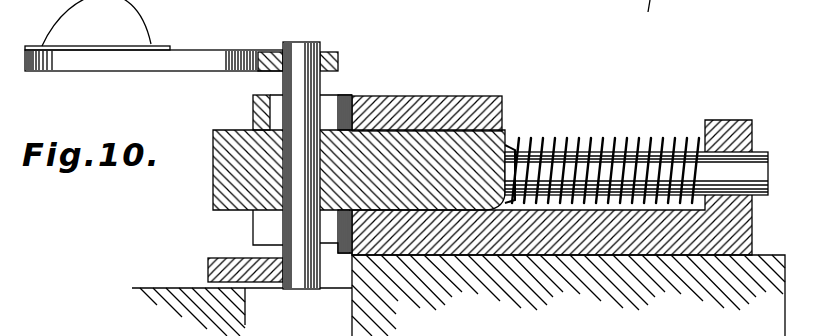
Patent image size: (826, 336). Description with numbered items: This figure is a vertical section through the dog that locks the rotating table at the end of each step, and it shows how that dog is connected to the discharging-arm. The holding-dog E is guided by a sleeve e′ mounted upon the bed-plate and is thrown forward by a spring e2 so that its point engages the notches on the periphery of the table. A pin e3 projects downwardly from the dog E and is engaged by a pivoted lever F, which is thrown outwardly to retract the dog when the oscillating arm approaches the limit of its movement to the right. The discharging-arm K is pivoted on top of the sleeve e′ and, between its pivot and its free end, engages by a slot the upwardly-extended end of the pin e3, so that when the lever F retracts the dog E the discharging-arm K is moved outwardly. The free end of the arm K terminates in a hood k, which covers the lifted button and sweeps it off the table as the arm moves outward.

The discharging-arm K is at (244, 34).
The hood k is at (96, 23).
The holding-dog E is at (213, 184).
The sleeve e′ is at (462, 96).
The spring e2 is at (613, 141).
The pin e3 is at (278, 251).
The pivoted lever F is at (208, 270).